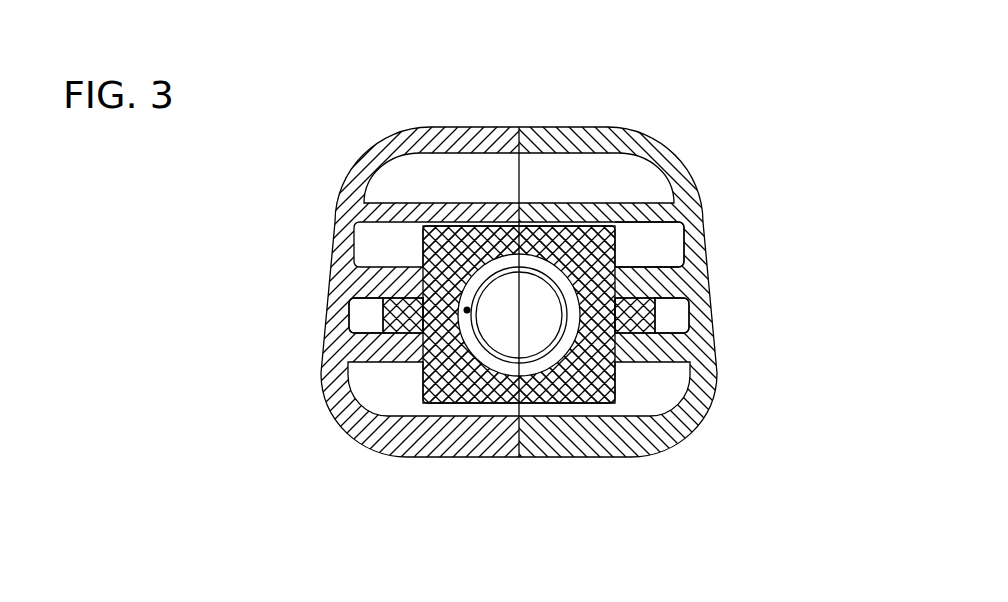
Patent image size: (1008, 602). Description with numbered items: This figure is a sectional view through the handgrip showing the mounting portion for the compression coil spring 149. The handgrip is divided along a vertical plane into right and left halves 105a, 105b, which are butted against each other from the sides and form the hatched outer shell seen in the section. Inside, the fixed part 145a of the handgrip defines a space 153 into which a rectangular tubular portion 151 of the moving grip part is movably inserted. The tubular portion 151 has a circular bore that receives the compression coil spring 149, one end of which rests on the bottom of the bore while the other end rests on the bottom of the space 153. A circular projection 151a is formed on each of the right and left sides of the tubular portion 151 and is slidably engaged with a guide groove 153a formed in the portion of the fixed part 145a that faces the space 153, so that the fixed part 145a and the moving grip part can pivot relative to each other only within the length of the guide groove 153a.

The fixed part 145a is at (687, 128).
The space 153 is at (648, 242).
The right half 105a is at (337, 215).
The left half 105b is at (715, 280).
The guide groove 153a is at (362, 320).
The circular projection 151a is at (396, 325).
The compression coil spring 149 is at (490, 355).
The tubular portion 151 is at (562, 393).